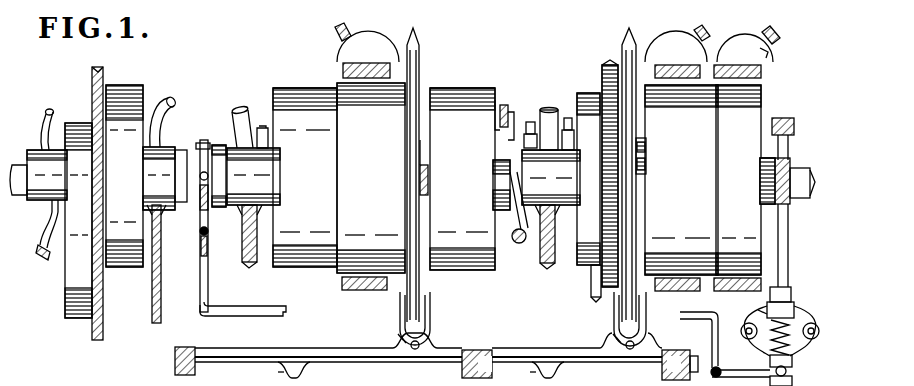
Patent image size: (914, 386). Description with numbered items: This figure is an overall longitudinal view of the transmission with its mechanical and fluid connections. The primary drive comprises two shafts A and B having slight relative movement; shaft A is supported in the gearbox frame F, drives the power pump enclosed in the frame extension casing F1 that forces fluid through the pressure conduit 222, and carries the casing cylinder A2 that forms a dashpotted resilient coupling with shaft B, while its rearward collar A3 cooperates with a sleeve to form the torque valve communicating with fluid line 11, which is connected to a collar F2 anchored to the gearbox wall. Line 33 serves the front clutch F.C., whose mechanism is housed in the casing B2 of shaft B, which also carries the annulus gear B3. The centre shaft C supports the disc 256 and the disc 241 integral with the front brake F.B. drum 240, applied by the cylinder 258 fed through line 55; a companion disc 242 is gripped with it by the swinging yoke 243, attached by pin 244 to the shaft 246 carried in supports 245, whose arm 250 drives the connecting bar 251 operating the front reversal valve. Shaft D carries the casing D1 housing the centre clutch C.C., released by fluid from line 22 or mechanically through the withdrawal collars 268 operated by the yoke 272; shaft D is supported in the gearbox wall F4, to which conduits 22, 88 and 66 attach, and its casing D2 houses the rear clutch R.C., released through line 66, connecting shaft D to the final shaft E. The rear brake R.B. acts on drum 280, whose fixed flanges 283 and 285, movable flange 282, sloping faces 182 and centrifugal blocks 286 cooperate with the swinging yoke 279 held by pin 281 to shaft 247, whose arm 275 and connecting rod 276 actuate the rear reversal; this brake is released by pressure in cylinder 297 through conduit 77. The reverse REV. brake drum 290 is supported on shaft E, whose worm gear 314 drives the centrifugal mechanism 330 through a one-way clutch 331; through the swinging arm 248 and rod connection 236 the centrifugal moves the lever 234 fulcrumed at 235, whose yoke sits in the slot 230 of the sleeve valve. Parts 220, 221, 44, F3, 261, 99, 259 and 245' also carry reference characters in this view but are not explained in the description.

The shaft A is at (20, 160).
The lubricant pipe 220 is at (52, 110).
The bearing 221 is at (60, 215).
The pressure conduit 222 is at (42, 250).
The frame extension casing F1 is at (72, 268).
The gearbox frame F is at (97, 300).
The casing cylinder A2 is at (124, 176).
The collar F2 is at (152, 308).
The collar A3 is at (178, 150).
The fluid line 11 is at (172, 103).
The slot 230 is at (203, 143).
The shaft B is at (212, 147).
The lever 234 is at (200, 228).
The fulcrum 235 is at (203, 240).
The rod connection 236 is at (250, 313).
The oil pipe 44 is at (238, 108).
The line 33 is at (263, 126).
The shaft F3 is at (249, 249).
The front clutch F.C. is at (304, 76).
The casing B2 is at (305, 137).
The front brake F.B. is at (365, 72).
The front brake drum 240 is at (382, 186).
The cylinder 258 is at (390, 40).
The conduit line 55 is at (336, 30).
The disc 241 is at (406, 290).
The companion disc 242 is at (421, 290).
The swinging yoke 243 is at (427, 318).
The pin 244 is at (424, 343).
The supports 245 is at (344, 352).
The shaft 246 is at (322, 357).
The arm 250 is at (283, 382).
The connecting bar 251 is at (269, 379).
The shaft 247 is at (572, 357).
The arm 275 is at (537, 382).
The connecting rod 276 is at (517, 379).
The annulus gear B3 is at (648, 368).
The bearing 261 is at (690, 378).
The centre clutch C.C. is at (469, 77).
The centre shaft C is at (423, 152).
The disc 256 is at (424, 170).
The cylindrical casing D1 is at (458, 190).
The withdrawal collars 268 is at (505, 104).
The fluid line 22 is at (527, 124).
The conduit 88 is at (548, 108).
The line 66 is at (568, 116).
The shaft D is at (522, 152).
The yoke 272 is at (518, 244).
The gearbox wall F4 is at (539, 249).
The cylindrical casing D2 is at (578, 196).
The fixed flange 285 is at (594, 298).
The rear clutch R.C. is at (593, 78).
The annular flange 282 is at (622, 40).
The fixed flange 283 is at (637, 42).
The swinging yoke 279 is at (642, 312).
The pin 281 is at (636, 345).
The sloping faces 182 is at (640, 148).
The movable blocks 286 is at (644, 166).
The rear brake R.B. is at (678, 72).
The rear brake drum 280 is at (691, 223).
The cylinder 297 is at (696, 32).
The conduit 77 is at (733, 40).
The reverse REV. is at (735, 72).
The reverse brake drum 290 is at (748, 228).
The band anchor 99 is at (772, 40).
The brake band 259 is at (768, 51).
The bearing block 245' is at (785, 117).
The final driven shaft E is at (800, 168).
The worm gear 314 is at (786, 206).
The centrifugal mechanism 330 is at (786, 300).
The one-way clutch 331 is at (768, 304).
The swinging arm 248 is at (740, 366).